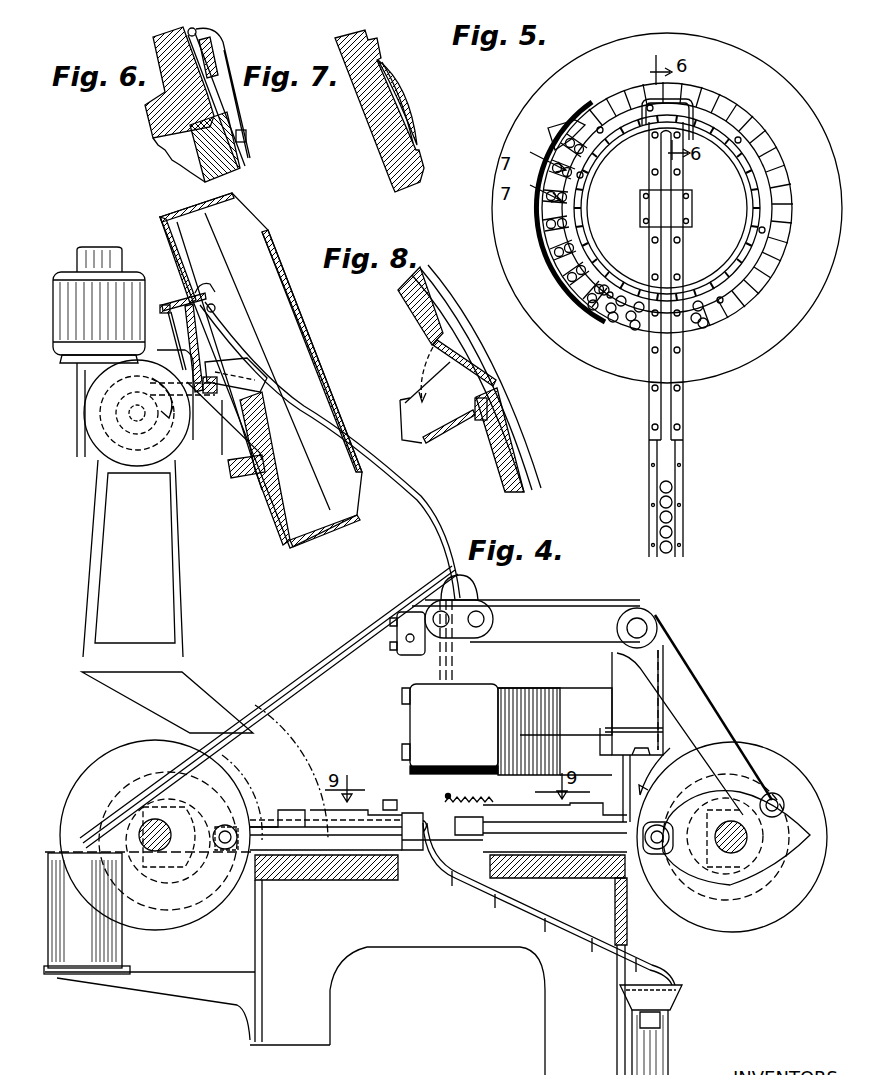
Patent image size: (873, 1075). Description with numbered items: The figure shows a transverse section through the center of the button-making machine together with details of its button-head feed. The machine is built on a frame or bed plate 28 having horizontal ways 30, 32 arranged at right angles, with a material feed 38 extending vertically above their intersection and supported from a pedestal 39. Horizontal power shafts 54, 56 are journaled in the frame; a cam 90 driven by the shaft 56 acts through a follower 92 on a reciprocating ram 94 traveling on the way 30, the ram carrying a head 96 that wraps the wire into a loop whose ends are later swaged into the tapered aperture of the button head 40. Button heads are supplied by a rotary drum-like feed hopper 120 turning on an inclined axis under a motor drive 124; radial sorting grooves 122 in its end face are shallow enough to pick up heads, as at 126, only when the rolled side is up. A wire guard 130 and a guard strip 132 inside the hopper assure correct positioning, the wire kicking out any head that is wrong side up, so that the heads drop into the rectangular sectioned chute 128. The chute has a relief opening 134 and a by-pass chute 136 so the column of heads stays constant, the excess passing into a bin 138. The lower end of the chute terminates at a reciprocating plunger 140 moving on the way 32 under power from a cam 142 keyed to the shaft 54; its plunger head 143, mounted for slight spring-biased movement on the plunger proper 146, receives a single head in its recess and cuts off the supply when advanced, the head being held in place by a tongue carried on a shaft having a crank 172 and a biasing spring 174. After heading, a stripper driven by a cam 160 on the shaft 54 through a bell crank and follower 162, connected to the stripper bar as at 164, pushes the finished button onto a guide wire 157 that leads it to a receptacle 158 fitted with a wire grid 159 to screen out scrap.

In FIG. 4, the frame or bed plate 28 is at (380, 878).
In FIG. 4, the way 30 is at (348, 870).
In FIG. 4, the way 32 is at (558, 865).
In FIG. 4, the material feed 38 is at (472, 695).
In FIG. 4, the pedestal 39 is at (558, 762).
In FIG. 6, the button head 40 is at (228, 96).
In FIG. 7, the button head 40 is at (400, 82).
In FIG. 5, the button head 40 is at (672, 520).
In FIG. 8, the button head 40 is at (500, 405).
In FIG. 4, the power shaft 54 is at (780, 795).
In FIG. 4, the power shaft 56 is at (163, 820).
In FIG. 4, the cam 90 is at (195, 875).
In FIG. 4, the follower 92 is at (222, 850).
In FIG. 4, the reciprocating ram 94 is at (305, 872).
In FIG. 4, the head 96 is at (384, 800).
In FIG. 5, the feed hopper 120 is at (795, 120).
In FIG. 4, the feed hopper 120 is at (270, 228).
In FIG. 7, the radial sorting grooves 122 is at (372, 43).
In FIG. 5, the radial sorting grooves 122 is at (520, 226).
In FIG. 4, the radial sorting grooves 122 is at (278, 522).
In FIG. 4, the motor drive 124 is at (74, 379).
In FIG. 7, the button heads 126 is at (415, 148).
In FIG. 6, the chute 128 is at (238, 168).
In FIG. 5, the chute 128 is at (665, 452).
In FIG. 8, the chute 128 is at (448, 318).
In FIG. 6, the wire guard 130 is at (188, 30).
In FIG. 5, the wire guard 130 is at (688, 100).
In FIG. 4, the wire guard 130 is at (198, 292).
In FIG. 6, the guard strip 132 is at (212, 58).
In FIG. 5, the guard strip 132 is at (735, 125).
In FIG. 4, the guard strip 132 is at (212, 300).
In FIG. 8, the relief opening 134 is at (443, 340).
In FIG. 8, the by-pass chute 136 is at (406, 372).
In FIG. 4, the by-pass chute 136 is at (315, 652).
In FIG. 4, the bin 138 is at (125, 958).
In FIG. 4, the reciprocating plunger 140 is at (528, 848).
In FIG. 4, the cam 142 is at (675, 900).
In FIG. 4, the plunger head 143 is at (412, 850).
In FIG. 4, the plunger proper 146 is at (475, 838).
In FIG. 4, the guide wire 157 is at (608, 950).
In FIG. 4, the receptacle 158 is at (672, 1012).
In FIG. 4, the wire grid 159 is at (660, 1050).
In FIG. 4, the cam 160 is at (798, 870).
In FIG. 4, the bell crank and follower 162 is at (708, 712).
In FIG. 4, the connection to stripper bar 164 is at (400, 610).
In FIG. 4, the crank 172 is at (458, 770).
In FIG. 4, the biasing spring 174 is at (470, 800).